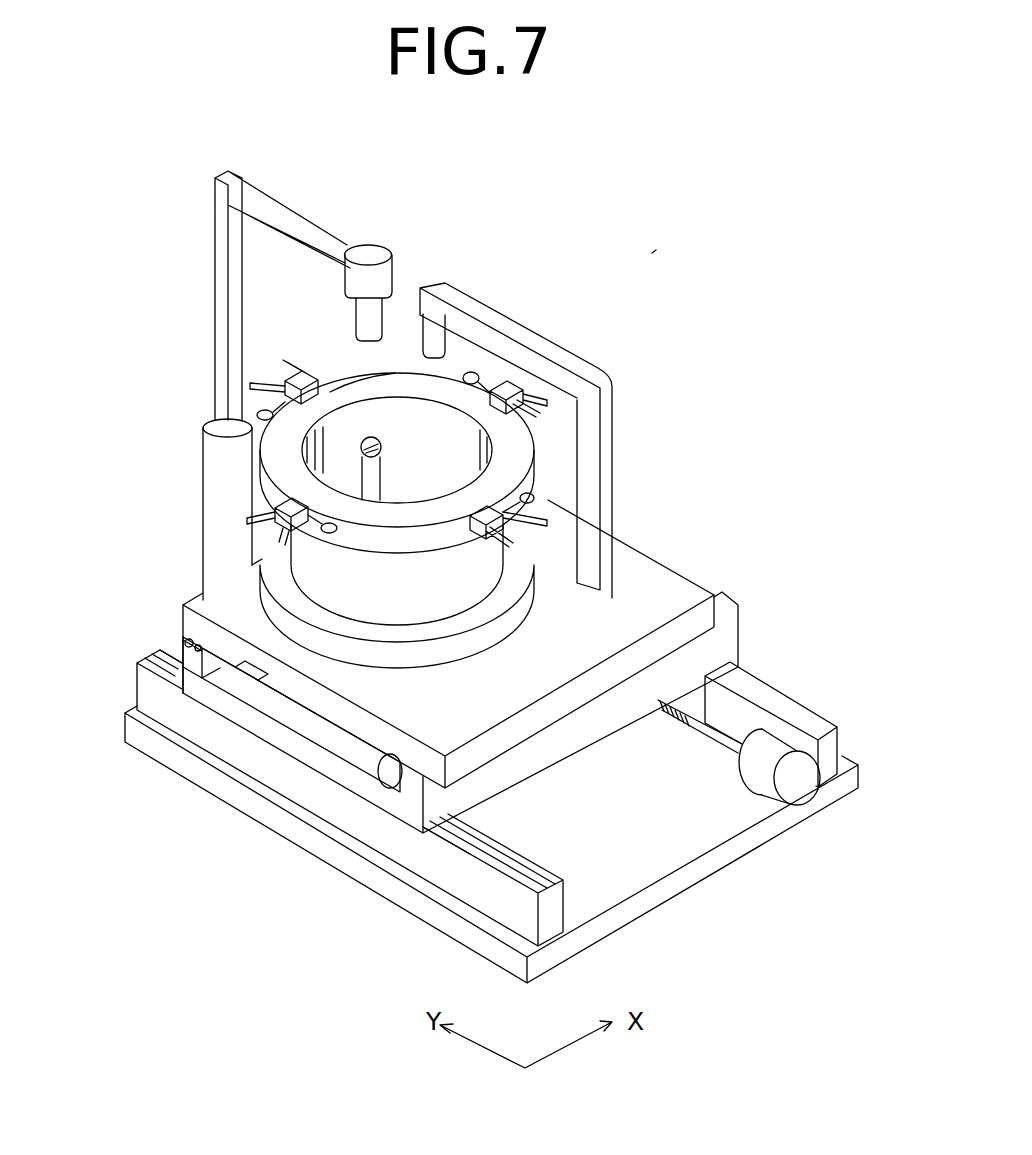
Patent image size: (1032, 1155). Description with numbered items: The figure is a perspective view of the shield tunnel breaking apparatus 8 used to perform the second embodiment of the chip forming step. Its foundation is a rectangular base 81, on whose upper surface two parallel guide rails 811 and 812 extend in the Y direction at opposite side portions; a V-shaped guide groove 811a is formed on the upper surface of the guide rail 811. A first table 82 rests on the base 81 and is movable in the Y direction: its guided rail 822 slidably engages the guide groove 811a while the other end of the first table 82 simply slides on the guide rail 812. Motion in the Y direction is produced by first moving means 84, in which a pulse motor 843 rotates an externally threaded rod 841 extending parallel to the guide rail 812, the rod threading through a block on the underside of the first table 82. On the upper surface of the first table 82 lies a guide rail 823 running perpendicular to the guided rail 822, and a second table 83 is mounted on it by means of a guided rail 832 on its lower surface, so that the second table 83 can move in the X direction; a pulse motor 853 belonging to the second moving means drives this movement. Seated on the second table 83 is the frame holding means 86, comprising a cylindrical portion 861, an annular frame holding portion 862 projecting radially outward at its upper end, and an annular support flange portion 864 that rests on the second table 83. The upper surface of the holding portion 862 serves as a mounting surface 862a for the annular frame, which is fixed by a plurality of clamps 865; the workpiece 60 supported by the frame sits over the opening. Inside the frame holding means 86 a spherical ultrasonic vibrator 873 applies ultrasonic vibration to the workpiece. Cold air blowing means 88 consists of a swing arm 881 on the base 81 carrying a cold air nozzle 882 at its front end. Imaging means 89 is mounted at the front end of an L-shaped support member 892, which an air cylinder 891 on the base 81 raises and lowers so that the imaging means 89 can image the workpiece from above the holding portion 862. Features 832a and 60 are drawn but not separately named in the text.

The shield tunnel breaking apparatus 8 is at (648, 255).
The workpiece (wafer) 60 is at (432, 398).
The base 81 is at (245, 838).
The first table 82 is at (737, 600).
The second table 83 is at (678, 577).
The first moving means 84 is at (746, 778).
The frame holding means 86 is at (463, 487).
The cold air blowing means 88 is at (559, 412).
The imaging means 89 is at (395, 264).
The guide rail 811 is at (405, 807).
The guide groove 811a is at (540, 872).
The guide rail 812 is at (790, 700).
The guided rail 822 is at (473, 830).
The guide rail 823 is at (187, 690).
The guided rail 832 is at (140, 637).
The rollers of guided portion 832a is at (183, 642).
The externally threaded rod 841 is at (672, 716).
The pulse motor 843 is at (793, 780).
The pulse motor 853 is at (392, 770).
The cylindrical portion 861 is at (487, 570).
The annular frame holding portion 862 is at (397, 399).
The mounting surface 862a is at (350, 372).
The annular support flange portion 864 is at (430, 655).
The clamps 865 is at (295, 360).
The ultrasonic vibrator 873 is at (380, 442).
The swing arm 881 is at (526, 327).
The cold air nozzle 882 is at (447, 348).
The air cylinder 891 is at (212, 462).
The L-shaped support member 892 is at (215, 270).